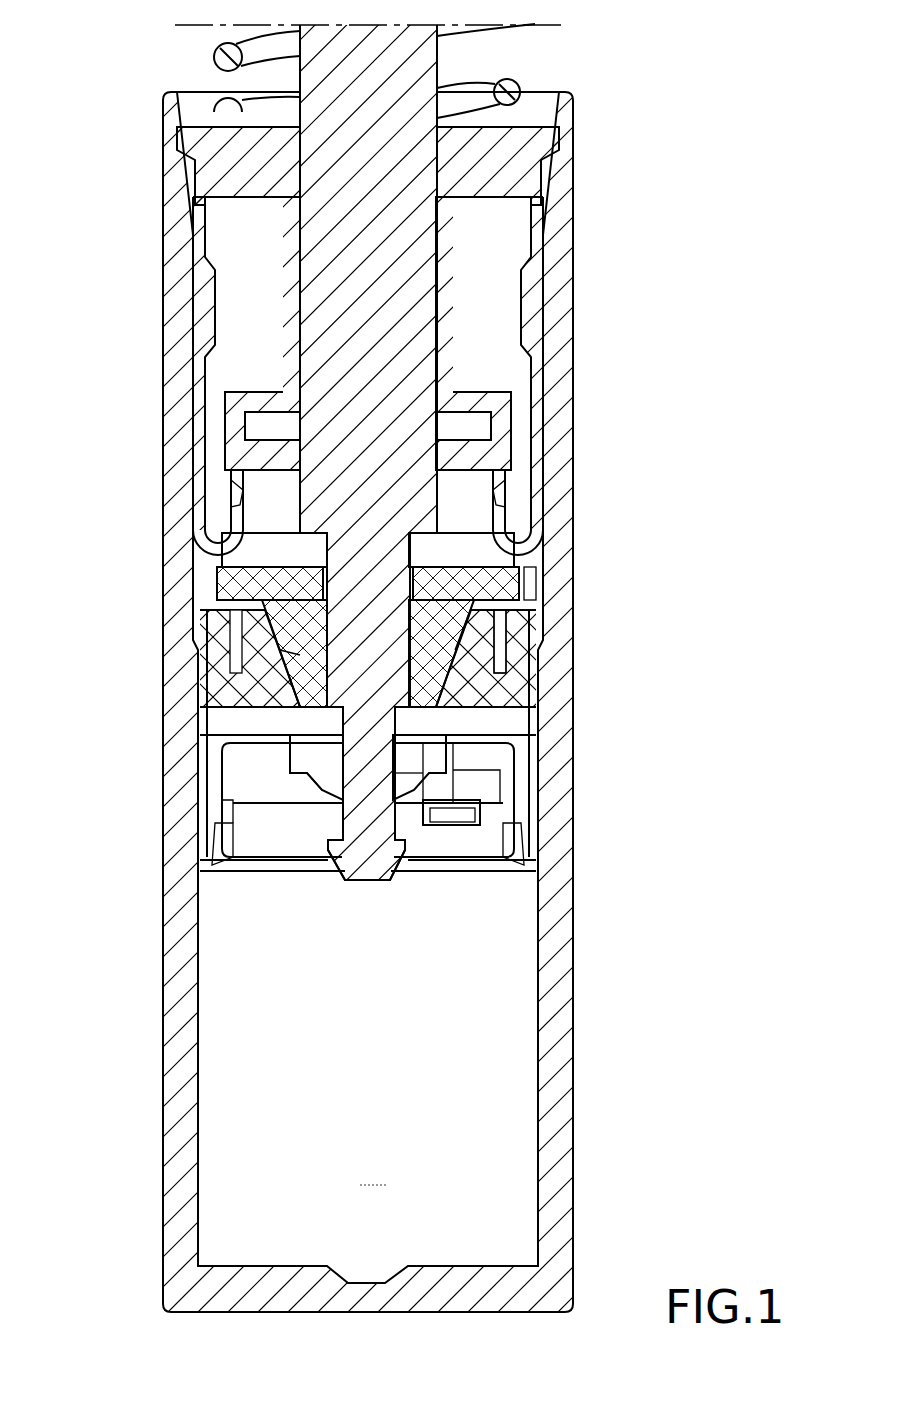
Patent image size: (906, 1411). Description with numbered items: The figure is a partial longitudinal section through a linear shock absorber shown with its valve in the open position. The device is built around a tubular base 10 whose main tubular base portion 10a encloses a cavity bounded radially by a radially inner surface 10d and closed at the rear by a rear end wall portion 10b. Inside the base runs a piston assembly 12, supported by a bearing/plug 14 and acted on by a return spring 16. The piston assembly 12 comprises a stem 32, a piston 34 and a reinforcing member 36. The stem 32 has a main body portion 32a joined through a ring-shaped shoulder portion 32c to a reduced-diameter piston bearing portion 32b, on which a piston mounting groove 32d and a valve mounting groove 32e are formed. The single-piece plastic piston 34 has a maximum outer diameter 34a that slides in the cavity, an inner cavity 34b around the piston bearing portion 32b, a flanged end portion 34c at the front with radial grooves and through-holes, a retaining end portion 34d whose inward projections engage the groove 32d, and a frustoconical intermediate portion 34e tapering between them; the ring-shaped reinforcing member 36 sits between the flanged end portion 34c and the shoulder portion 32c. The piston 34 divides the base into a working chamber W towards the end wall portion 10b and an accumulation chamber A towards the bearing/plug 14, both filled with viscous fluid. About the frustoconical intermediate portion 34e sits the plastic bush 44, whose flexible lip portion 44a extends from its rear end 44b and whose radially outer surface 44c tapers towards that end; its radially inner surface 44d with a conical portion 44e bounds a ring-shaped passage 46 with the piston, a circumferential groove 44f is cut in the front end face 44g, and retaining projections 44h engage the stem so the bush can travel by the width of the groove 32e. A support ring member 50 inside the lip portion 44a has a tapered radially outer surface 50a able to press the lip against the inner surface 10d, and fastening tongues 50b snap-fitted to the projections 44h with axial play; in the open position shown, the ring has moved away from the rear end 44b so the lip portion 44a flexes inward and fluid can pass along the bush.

The tubular base 10 is at (162, 534).
The main tubular base portion 10a is at (178, 958).
The rear end wall portion 10b is at (230, 1297).
The radially inner surface 10d is at (538, 1018).
The piston assembly 12 is at (560, 581).
The bearing/plug 14 is at (545, 127).
The return spring 16 is at (212, 60).
The stem 32 is at (293, 297).
The main body portion 32a is at (445, 258).
The piston bearing portion 32b is at (525, 545).
The ring-shaped shoulder portion 32c is at (232, 528).
The piston mounting groove 32d is at (308, 740).
The valve mounting groove 32e is at (303, 778).
The piston 34 is at (260, 626).
The maximum outer diameter 34a is at (530, 575).
The inner cavity 34b is at (465, 700).
The flanged end portion 34c is at (262, 598).
The retaining end portion 34d is at (295, 768).
The frustoconical intermediate portion 34e is at (298, 657).
The reinforcing member 36 is at (240, 555).
The bush 44 is at (541, 678).
The flexible lip portion 44a is at (520, 815).
The rear end 44b is at (520, 760).
The radially outer surface 44c is at (212, 840).
The radially inner surface 44d is at (460, 735).
The conical portion 44e is at (530, 585).
The circumferential groove 44f is at (502, 640).
The front end face 44g is at (505, 612).
The retaining projections 44h is at (393, 810).
The ring-shaped passage 46 is at (265, 702).
The support ring member 50 is at (475, 850).
The radially outer surface 50a is at (210, 860).
The fastening tongues 50b is at (463, 817).
The accumulation chamber A is at (470, 508).
The working chamber W is at (374, 1171).